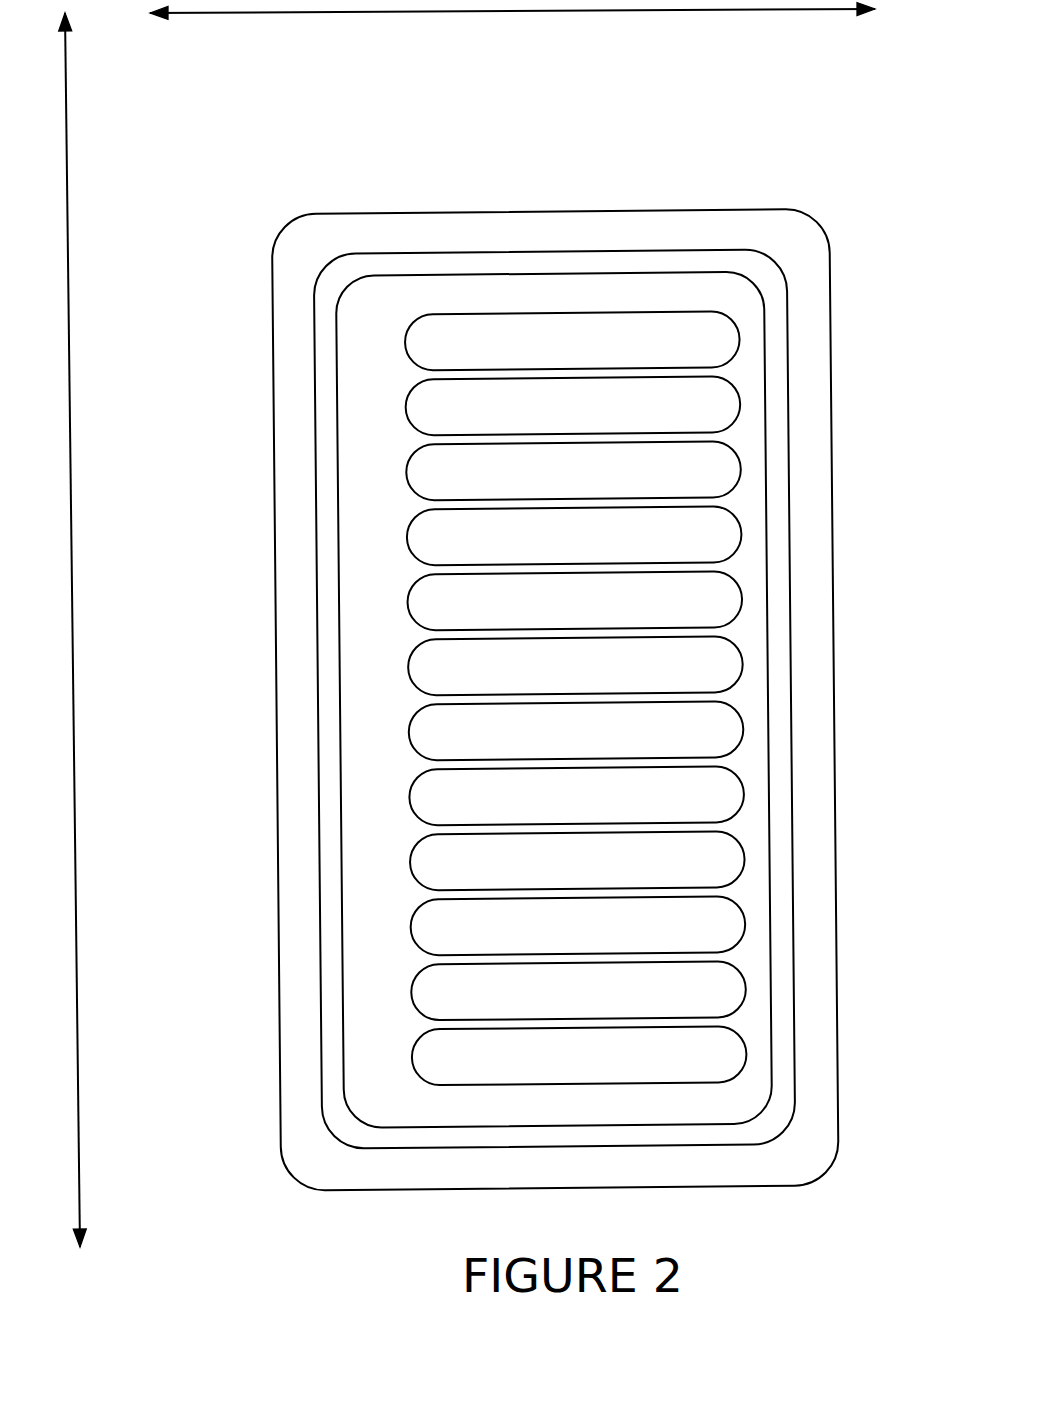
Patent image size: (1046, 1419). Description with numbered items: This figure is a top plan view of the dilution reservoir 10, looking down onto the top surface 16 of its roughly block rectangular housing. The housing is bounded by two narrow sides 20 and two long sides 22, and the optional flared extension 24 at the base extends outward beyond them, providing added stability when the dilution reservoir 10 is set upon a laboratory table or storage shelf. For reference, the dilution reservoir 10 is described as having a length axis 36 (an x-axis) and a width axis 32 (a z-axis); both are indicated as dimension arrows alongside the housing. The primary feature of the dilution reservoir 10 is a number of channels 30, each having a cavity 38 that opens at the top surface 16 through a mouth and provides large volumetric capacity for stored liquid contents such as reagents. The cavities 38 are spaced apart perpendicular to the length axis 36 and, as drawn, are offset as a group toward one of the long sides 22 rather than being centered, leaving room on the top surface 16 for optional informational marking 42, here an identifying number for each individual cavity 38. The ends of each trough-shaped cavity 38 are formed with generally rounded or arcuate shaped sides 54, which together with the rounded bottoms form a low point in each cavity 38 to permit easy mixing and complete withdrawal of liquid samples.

The dilution reservoir 10 is at (740, 190).
The top surface 16 is at (588, 297).
The narrow side 20 is at (422, 253).
The long side 22 is at (767, 582).
The flared extension 24 is at (815, 380).
The channel 30 is at (428, 467).
The width axis 32 is at (555, 12).
The length axis 36 is at (69, 436).
The cavity 38 is at (557, 357).
The informational marking 42 is at (360, 1056).
The arcuate shaped side 54 is at (410, 1000).